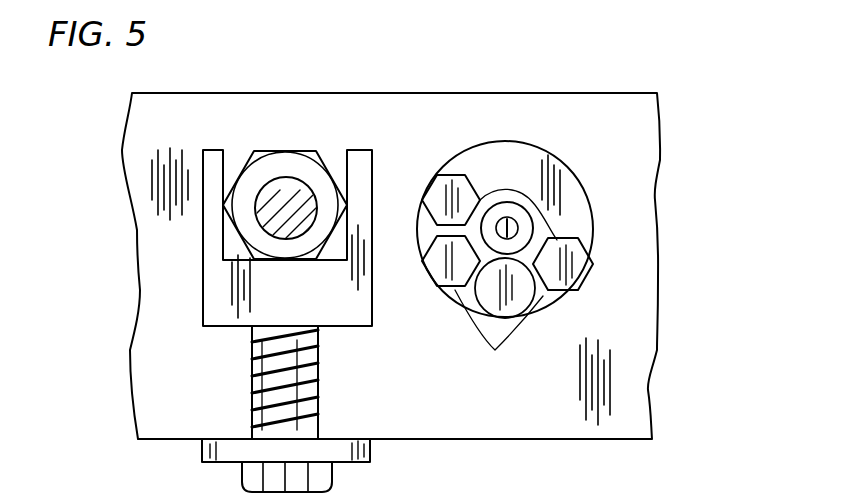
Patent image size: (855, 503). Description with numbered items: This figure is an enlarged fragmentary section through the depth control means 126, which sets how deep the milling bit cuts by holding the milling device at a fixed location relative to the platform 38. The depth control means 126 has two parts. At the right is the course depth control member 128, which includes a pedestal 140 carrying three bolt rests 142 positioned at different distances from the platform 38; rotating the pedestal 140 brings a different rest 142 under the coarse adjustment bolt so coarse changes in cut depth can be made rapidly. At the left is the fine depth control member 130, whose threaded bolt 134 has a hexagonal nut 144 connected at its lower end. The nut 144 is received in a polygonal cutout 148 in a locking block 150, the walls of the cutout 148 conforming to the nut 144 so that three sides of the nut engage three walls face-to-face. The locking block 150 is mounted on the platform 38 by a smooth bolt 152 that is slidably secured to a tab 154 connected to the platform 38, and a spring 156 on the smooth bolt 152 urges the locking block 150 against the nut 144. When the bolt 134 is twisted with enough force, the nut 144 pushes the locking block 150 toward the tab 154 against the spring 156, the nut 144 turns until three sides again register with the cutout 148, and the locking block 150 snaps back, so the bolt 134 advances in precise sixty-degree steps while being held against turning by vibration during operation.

The platform 38 is at (652, 125).
The depth control means 126 is at (394, 114).
The course depth control member 128 is at (603, 243).
The fine depth control member 130 is at (203, 249).
The bolt 134 is at (270, 178).
The pedestal 140 is at (533, 142).
The bolt rests 142 is at (437, 175).
The hexagonal nut 144 is at (308, 150).
The polygonal cutout 148 is at (230, 157).
The locking block 150 is at (212, 298).
The smooth bolt 152 is at (252, 403).
The tab 154 is at (370, 458).
The spring 156 is at (318, 363).